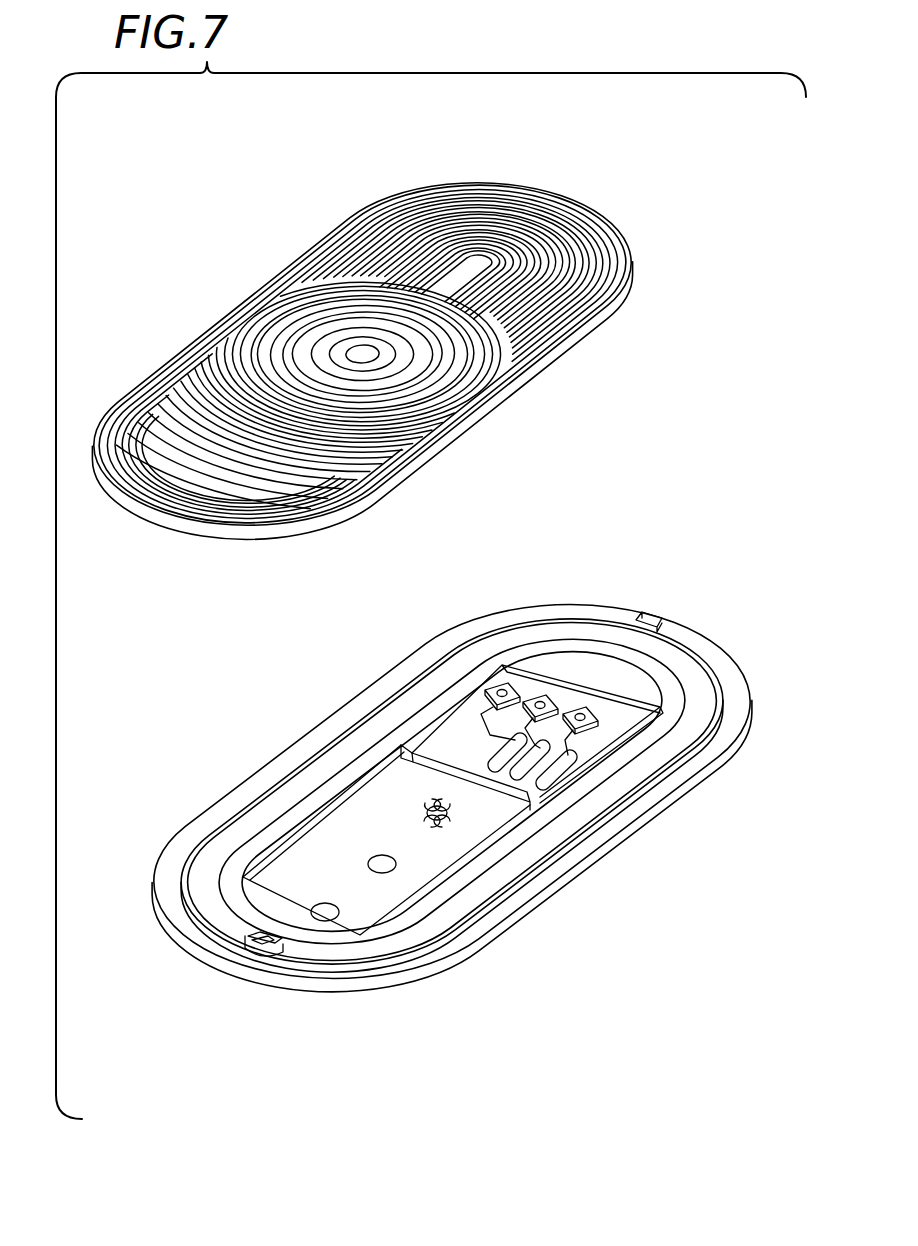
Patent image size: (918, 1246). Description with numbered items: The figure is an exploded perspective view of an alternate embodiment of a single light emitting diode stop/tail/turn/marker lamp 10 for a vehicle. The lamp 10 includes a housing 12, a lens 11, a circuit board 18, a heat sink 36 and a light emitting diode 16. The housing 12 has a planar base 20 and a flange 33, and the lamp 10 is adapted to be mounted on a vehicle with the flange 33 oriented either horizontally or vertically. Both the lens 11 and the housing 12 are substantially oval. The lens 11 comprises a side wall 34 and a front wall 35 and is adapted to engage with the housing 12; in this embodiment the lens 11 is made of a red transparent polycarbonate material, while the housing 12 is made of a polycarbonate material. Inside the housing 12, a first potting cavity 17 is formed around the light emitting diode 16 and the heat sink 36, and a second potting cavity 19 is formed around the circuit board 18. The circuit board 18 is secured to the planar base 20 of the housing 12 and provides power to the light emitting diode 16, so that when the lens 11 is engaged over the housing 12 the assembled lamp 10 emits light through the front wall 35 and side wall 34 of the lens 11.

The stop/tail/turn/marker lamp 10 is at (702, 395).
The lens 11 is at (526, 188).
The housing 12 is at (220, 830).
The light emitting diode 16 is at (385, 902).
The first potting cavity 17 is at (527, 808).
The circuit board 18 is at (585, 747).
The second potting cavity 19 is at (622, 733).
The planar base 20 is at (247, 903).
The flange 33 is at (732, 688).
The side wall 34 is at (613, 303).
The front wall 35 is at (189, 356).
The heat sink 36 is at (435, 828).